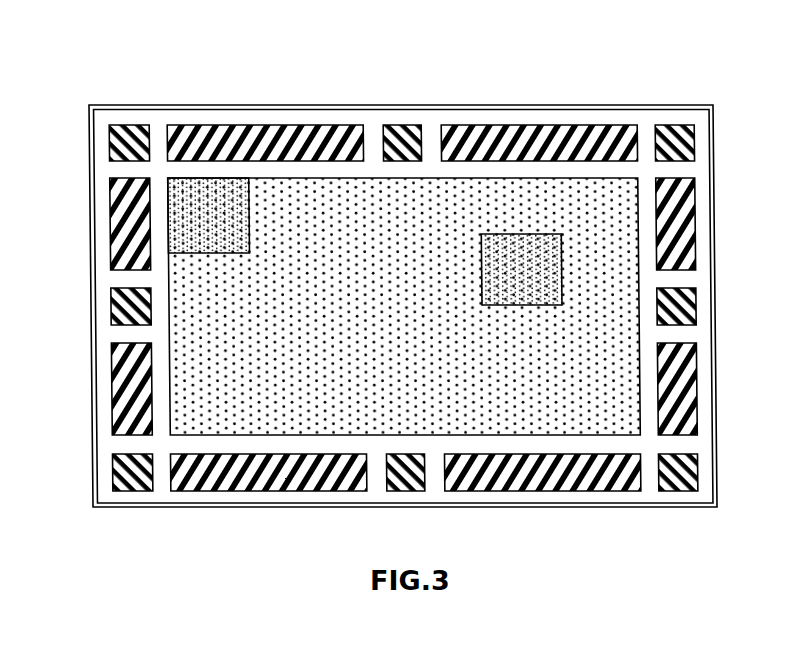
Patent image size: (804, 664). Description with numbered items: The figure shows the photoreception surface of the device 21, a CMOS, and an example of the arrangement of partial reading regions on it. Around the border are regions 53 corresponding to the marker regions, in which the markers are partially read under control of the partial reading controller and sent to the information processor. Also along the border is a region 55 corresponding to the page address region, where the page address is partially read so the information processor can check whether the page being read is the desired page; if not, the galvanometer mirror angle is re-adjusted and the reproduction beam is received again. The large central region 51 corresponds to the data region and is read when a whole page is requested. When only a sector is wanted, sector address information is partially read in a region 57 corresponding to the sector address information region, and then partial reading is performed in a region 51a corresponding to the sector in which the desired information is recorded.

The device 21 is at (611, 50).
The region corresponding to the data region 51 is at (637, 200).
The region corresponding to the sector 51a is at (521, 269).
The regions corresponding to the marker regions 53 is at (120, 125).
The region corresponding to the page address region 55 is at (249, 125).
The region corresponding to the sector address information region 57 is at (209, 215).